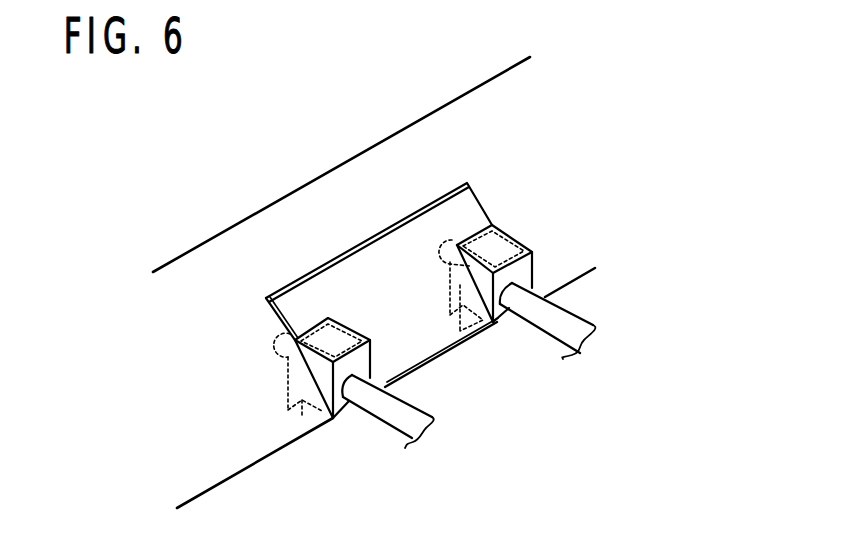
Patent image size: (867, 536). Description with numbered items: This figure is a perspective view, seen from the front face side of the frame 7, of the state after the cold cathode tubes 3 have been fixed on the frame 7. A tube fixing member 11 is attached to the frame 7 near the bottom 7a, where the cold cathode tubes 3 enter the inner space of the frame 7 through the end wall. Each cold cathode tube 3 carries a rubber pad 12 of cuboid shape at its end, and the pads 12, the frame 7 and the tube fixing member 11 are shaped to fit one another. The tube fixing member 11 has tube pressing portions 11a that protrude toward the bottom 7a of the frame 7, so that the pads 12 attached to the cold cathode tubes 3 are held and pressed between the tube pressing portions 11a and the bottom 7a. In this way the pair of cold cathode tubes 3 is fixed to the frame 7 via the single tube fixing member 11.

The cold cathode tube 3 is at (570, 335).
The frame 7 is at (220, 284).
The bottom 7a is at (398, 500).
The tube fixing member 11 is at (375, 262).
The tube pressing portion 11a is at (533, 260).
The pad 12 is at (443, 360).